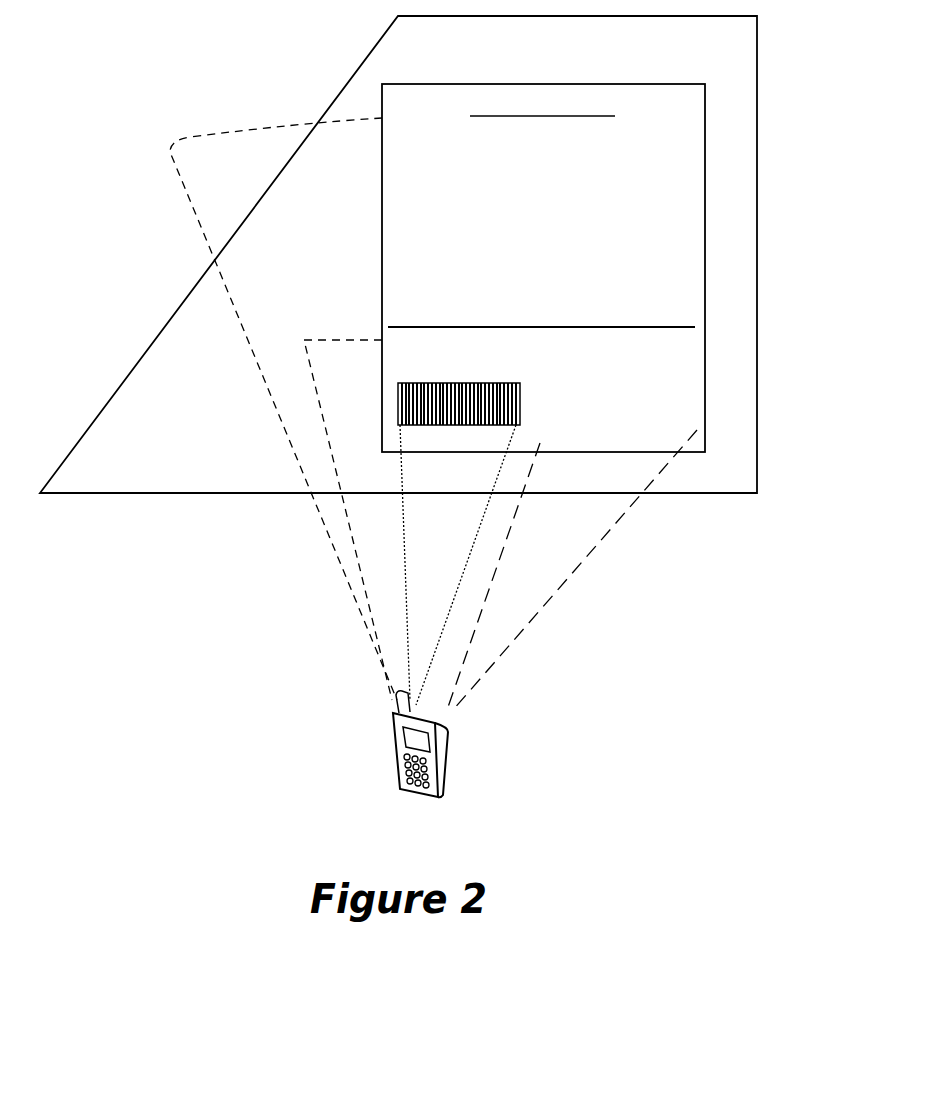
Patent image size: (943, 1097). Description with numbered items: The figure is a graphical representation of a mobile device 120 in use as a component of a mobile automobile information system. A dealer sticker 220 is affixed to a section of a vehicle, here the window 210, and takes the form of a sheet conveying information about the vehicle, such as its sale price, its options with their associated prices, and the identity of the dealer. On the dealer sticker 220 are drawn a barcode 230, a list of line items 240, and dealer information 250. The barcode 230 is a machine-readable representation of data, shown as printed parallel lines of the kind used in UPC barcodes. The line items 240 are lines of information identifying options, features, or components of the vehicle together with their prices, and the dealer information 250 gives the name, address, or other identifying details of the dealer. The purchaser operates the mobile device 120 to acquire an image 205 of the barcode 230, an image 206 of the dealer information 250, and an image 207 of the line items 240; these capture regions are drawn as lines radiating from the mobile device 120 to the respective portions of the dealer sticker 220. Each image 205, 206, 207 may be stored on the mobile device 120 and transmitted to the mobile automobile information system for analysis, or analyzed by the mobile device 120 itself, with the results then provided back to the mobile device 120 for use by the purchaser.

The mobile device 120 is at (430, 797).
The window 210 is at (757, 135).
The dealer sticker 220 is at (380, 102).
The barcode 230 is at (398, 410).
The line items 240 is at (380, 232).
The dealer information 250 is at (698, 408).
The image 205 is at (407, 618).
The image 206 is at (560, 585).
The image 207 is at (335, 565).